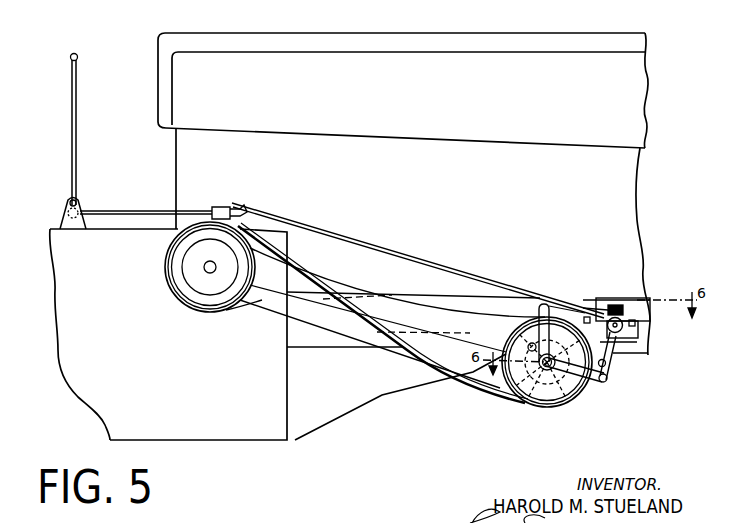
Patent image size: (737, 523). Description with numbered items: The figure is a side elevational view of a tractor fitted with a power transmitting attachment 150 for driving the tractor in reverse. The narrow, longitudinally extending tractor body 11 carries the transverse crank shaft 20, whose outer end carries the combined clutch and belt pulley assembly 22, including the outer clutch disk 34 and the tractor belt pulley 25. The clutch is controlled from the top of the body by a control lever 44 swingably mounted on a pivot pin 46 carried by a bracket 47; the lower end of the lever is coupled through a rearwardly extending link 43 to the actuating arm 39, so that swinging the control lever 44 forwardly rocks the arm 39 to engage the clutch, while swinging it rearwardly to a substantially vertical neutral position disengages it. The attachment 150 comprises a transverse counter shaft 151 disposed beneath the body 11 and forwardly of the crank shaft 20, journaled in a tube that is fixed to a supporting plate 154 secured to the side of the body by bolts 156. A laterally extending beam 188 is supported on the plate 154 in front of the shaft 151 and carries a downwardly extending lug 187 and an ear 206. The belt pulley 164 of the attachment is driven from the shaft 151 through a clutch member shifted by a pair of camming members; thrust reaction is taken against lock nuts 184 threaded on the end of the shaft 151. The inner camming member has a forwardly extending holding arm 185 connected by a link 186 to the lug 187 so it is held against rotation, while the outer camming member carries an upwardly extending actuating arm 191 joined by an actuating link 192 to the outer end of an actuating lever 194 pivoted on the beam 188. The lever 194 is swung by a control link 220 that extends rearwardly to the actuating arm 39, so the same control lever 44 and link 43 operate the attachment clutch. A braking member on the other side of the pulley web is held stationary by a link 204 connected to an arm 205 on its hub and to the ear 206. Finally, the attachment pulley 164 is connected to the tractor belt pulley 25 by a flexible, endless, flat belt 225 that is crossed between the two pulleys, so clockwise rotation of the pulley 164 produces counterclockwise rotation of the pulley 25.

The tractor body 11 is at (322, 347).
The crank shaft 20 is at (208, 274).
The combined clutch and belt pulley assembly 22 is at (166, 284).
The belt pulley 25 is at (243, 303).
The outer clutch disk 34 is at (182, 260).
The actuating arm 39 is at (226, 207).
The link 43 is at (118, 211).
The control lever 44 is at (72, 105).
The pivot pin 46 is at (74, 200).
The bracket 47 is at (62, 221).
The power transmitting attachment 150 is at (570, 268).
The counter shaft 151 is at (522, 394).
The supporting plate 154 is at (628, 310).
The bolts 156 is at (588, 316).
The belt pulley 164 is at (512, 339).
The lock nuts 184 is at (547, 371).
The holding arm 185 is at (572, 382).
The link 186 is at (614, 384).
The lug 187 is at (622, 344).
The transverse beam 188 is at (650, 309).
The actuating arm 191 is at (530, 317).
The actuating link 192 is at (553, 300).
The actuating lever 194 is at (623, 300).
The link 204 is at (606, 365).
The arm 205 is at (495, 382).
The ear 206 is at (615, 298).
The control link 220 is at (388, 250).
The belt 225 is at (318, 280).